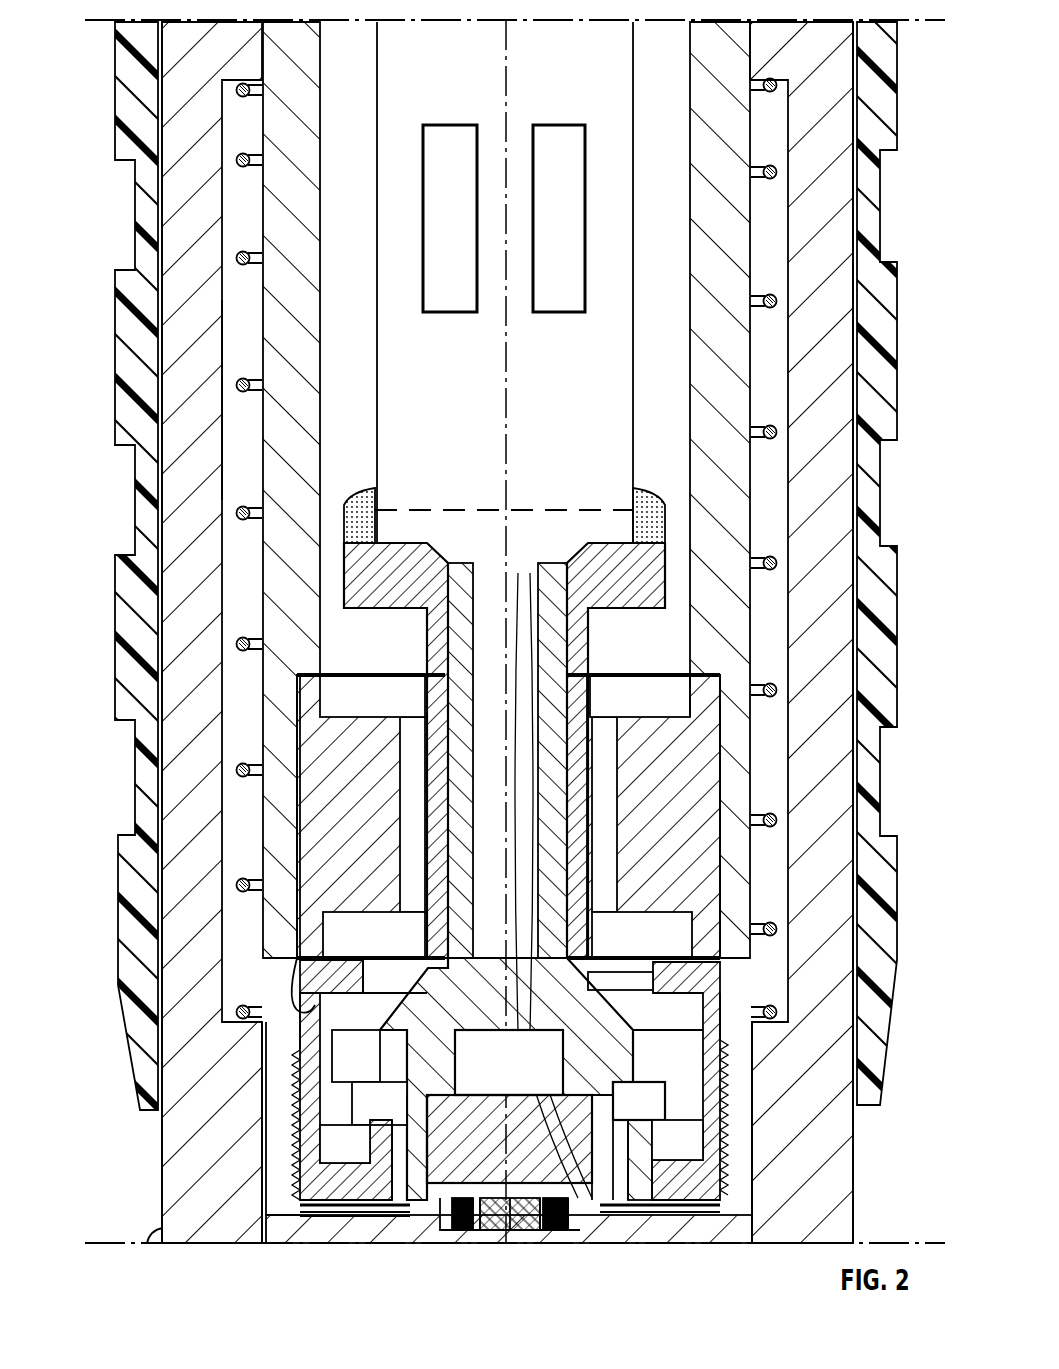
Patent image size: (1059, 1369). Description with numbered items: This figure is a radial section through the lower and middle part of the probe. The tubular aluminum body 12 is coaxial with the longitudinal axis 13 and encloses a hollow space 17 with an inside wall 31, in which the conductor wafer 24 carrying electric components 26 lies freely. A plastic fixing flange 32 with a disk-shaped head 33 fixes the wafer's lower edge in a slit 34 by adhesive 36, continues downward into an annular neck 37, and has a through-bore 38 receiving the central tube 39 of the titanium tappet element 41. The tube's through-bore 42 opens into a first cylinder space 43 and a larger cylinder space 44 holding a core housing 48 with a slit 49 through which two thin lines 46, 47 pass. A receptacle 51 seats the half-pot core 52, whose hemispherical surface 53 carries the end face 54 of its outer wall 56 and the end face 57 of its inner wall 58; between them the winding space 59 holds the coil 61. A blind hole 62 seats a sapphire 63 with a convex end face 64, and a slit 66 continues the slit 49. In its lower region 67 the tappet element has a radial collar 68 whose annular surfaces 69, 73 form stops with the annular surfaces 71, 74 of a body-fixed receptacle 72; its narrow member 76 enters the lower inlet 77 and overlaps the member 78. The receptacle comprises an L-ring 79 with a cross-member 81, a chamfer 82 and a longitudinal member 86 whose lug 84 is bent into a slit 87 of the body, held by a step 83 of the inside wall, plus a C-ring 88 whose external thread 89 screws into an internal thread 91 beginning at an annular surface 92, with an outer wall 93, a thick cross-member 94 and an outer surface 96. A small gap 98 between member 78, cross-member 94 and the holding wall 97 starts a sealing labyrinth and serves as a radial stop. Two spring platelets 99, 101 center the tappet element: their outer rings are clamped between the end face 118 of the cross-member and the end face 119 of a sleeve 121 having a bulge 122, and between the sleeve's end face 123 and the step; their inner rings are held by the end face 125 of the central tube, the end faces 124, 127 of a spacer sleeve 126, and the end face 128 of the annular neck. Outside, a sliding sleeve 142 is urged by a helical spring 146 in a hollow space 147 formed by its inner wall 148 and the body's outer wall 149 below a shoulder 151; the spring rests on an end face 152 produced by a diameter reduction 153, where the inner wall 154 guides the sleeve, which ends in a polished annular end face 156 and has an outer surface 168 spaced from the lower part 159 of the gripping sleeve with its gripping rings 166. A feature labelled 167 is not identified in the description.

The body 12 is at (725, 360).
The geometrical longitudinal axis 13 is at (506, 418).
The hollow space 17 is at (334, 236).
The conductor wafer 24 is at (556, 66).
The electric components 26 is at (535, 128).
The inside wall 31 is at (690, 245).
The fixing flange 32 is at (668, 588).
The disk-shaped head 33 is at (410, 568).
The slit 34 is at (390, 510).
The adhesive 36 is at (640, 500).
The annular neck 37 is at (430, 634).
The through-bore 38 is at (582, 630).
The central tube 39 is at (462, 652).
The tappet element 41 is at (700, 775).
The through-bore 42 is at (479, 732).
The first cylinder space 43 is at (500, 1035).
The cylinder space 44 is at (583, 1107).
The line 46 is at (508, 573).
The line 47 is at (525, 573).
The core housing 48 is at (439, 1144).
The slit 49 is at (612, 1202).
The receptacle 51 is at (440, 1200).
The half-pot core 52 is at (520, 1198).
The hemispherical surface 53 is at (578, 1228).
The end face 54 is at (462, 1228).
The outer wall 56 is at (455, 1215).
The end face 57 is at (486, 1228).
The inner wall 58 is at (509, 1062).
The winding space 59 is at (556, 1212).
The coil 61 is at (470, 1212).
The blind hole 62 is at (545, 1228).
The sapphire 63 is at (497, 1222).
The convex end face 64 is at (526, 1216).
The slit 66 is at (597, 1185).
The lower region 67 is at (630, 1050).
The radial collar 68 is at (862, 1094).
The annular surface 69 is at (365, 990).
The annular surface 71 is at (305, 1000).
The receptacle 72 is at (715, 1110).
The annular surface 73 is at (300, 1130).
The annular surface 74 is at (365, 1105).
The narrow member 76 is at (715, 1140).
The lower inlet 77 is at (300, 1205).
The member 78 is at (418, 1110).
The L-ring 79 is at (720, 975).
The cross-member 81 is at (735, 935).
The chamfer 82 is at (335, 930).
The step 83 is at (700, 690).
The lug 84 is at (253, 1047).
The longitudinal member 86 is at (726, 1010).
The slit 87 is at (258, 1162).
The C-ring 88 is at (682, 1237).
The external thread 89 is at (692, 1205).
The internal thread 91 is at (728, 1075).
The annular surface 92 is at (335, 1212).
The outer wall 93 is at (300, 1093).
The cross-member 94 is at (360, 1215).
The outer surface 96 is at (392, 1198).
The holding wall 97 is at (640, 1206).
The gap 98 is at (402, 1190).
The spring platelet 99 is at (630, 975).
The spring platelet 101 is at (722, 672).
The end face 118 is at (300, 970).
The end face 119 is at (300, 975).
The sleeve 121 is at (312, 748).
The bulge 122 is at (352, 819).
The end face 123 is at (300, 675).
The end face 124 is at (596, 975).
The end face 125 is at (440, 958).
The spacer sleeve 126 is at (595, 740).
The end face 127 is at (578, 656).
The end face 128 is at (438, 689).
The sliding sleeve 142 is at (188, 344).
The helical spring 146 is at (236, 388).
The hollow space 147 is at (237, 477).
The inner wall 148 is at (228, 420).
The outer wall 149 is at (255, 336).
The shoulder 151 is at (236, 91).
The end face 152 is at (225, 1010).
The diameter reduction 153 is at (258, 1198).
The inner wall 154 is at (322, 1207).
The end face 156 is at (800, 1243).
The lower part 159 is at (145, 290).
The gripping rings 166 is at (125, 150).
The tube end 167 is at (158, 1122).
The outer surface 168 is at (150, 1243).